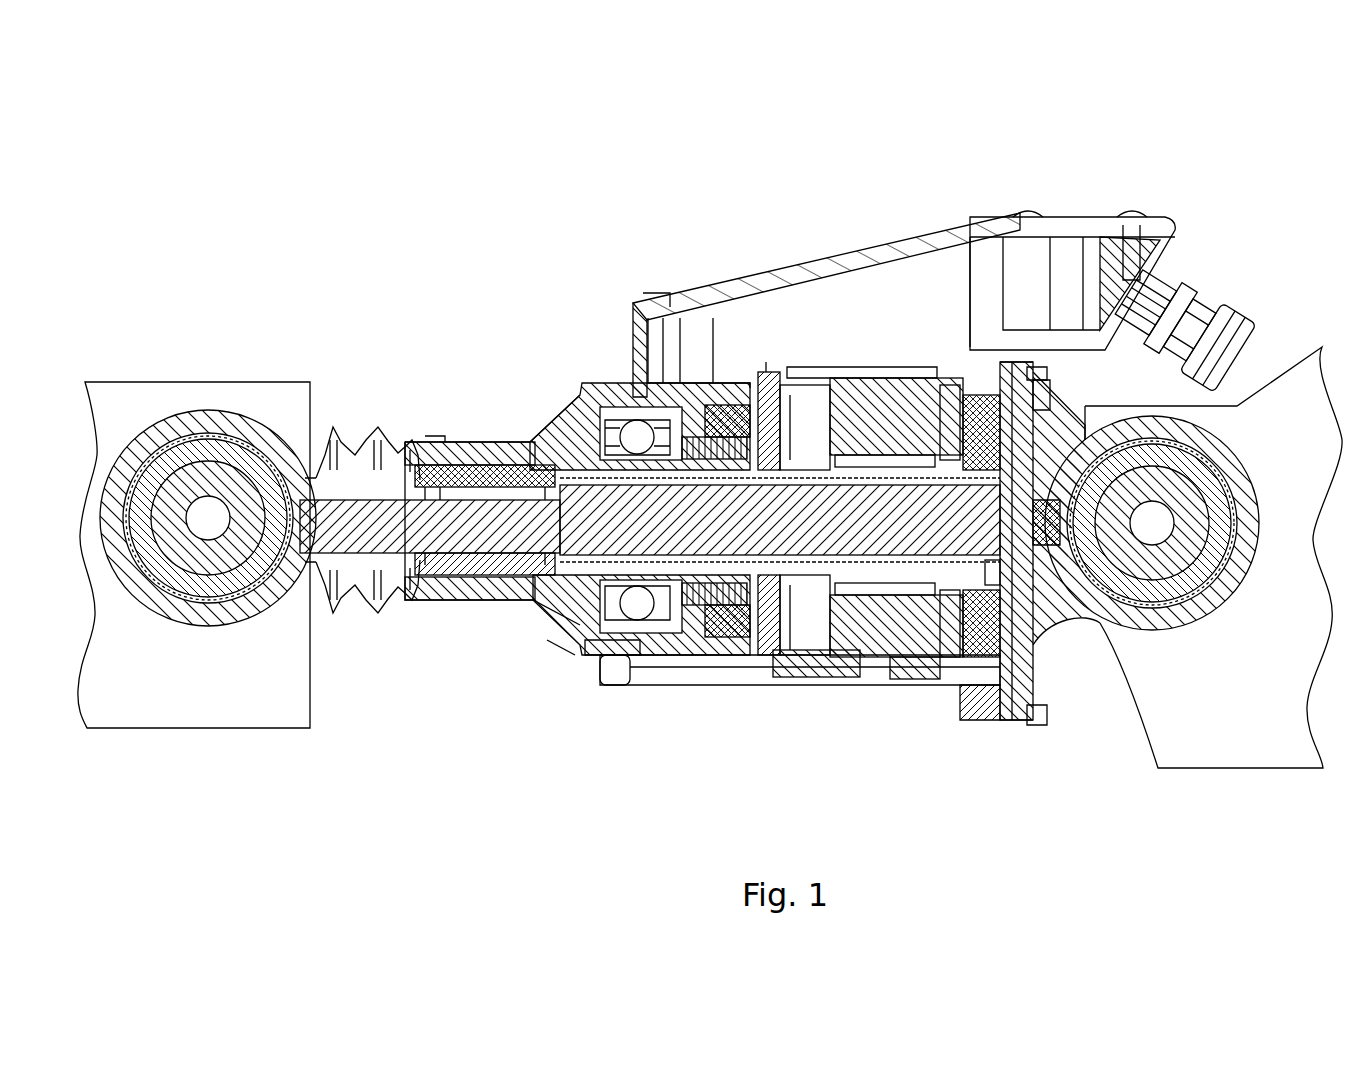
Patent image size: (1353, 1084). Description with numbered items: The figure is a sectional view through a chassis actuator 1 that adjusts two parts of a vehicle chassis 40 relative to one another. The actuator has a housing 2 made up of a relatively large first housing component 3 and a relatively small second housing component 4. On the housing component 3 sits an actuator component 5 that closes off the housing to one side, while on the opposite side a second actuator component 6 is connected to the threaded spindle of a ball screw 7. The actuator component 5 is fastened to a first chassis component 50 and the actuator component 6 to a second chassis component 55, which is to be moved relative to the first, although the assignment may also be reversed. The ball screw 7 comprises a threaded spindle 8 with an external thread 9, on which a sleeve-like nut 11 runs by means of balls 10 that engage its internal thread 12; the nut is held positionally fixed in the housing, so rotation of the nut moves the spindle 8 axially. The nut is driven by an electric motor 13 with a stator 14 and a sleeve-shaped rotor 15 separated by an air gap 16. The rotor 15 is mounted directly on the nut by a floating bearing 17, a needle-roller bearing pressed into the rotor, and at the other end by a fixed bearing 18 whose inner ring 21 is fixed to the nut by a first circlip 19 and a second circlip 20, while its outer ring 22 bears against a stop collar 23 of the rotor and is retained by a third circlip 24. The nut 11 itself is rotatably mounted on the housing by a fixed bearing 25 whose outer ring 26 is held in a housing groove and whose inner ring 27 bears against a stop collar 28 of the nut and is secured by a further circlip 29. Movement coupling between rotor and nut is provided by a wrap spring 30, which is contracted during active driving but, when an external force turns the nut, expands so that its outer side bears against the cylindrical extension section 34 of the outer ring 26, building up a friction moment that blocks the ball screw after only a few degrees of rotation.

The chassis actuator 1 is at (1108, 144).
The housing 2 is at (888, 186).
The first housing component 3 is at (1062, 222).
The second housing component 4 is at (577, 383).
The actuator component 5 is at (1198, 615).
The second actuator component 6 is at (258, 612).
The ball screw 7 is at (540, 612).
The threaded spindle 8 is at (462, 432).
The external thread 9 is at (548, 425).
The balls 10 is at (662, 622).
The nut 11 is at (863, 690).
The internal thread 12 is at (768, 640).
The electric motor 13 is at (933, 284).
The stator 14 is at (878, 368).
The rotor 15 is at (948, 390).
The air gap 16 is at (910, 382).
The floating bearing 17 is at (800, 380).
The fixed bearing 18 is at (940, 685).
The first circlip 19 is at (897, 685).
The second circlip 20 is at (1063, 628).
The inner ring 21 is at (990, 580).
The outer ring 22 is at (966, 722).
The stop collar 23 is at (1013, 423).
The third circlip 24 is at (1026, 725).
The fixed bearing 25 is at (618, 400).
The outer ring 26 is at (697, 395).
The inner ring 27 is at (592, 640).
The stop collar 28 is at (718, 400).
The circlip 29 is at (560, 650).
The wrap spring 30 is at (712, 640).
The cylindrical extension section 34 is at (690, 645).
The vehicle chassis 40 is at (1286, 352).
The first chassis component 50 is at (1247, 750).
The second chassis component 55 is at (163, 691).